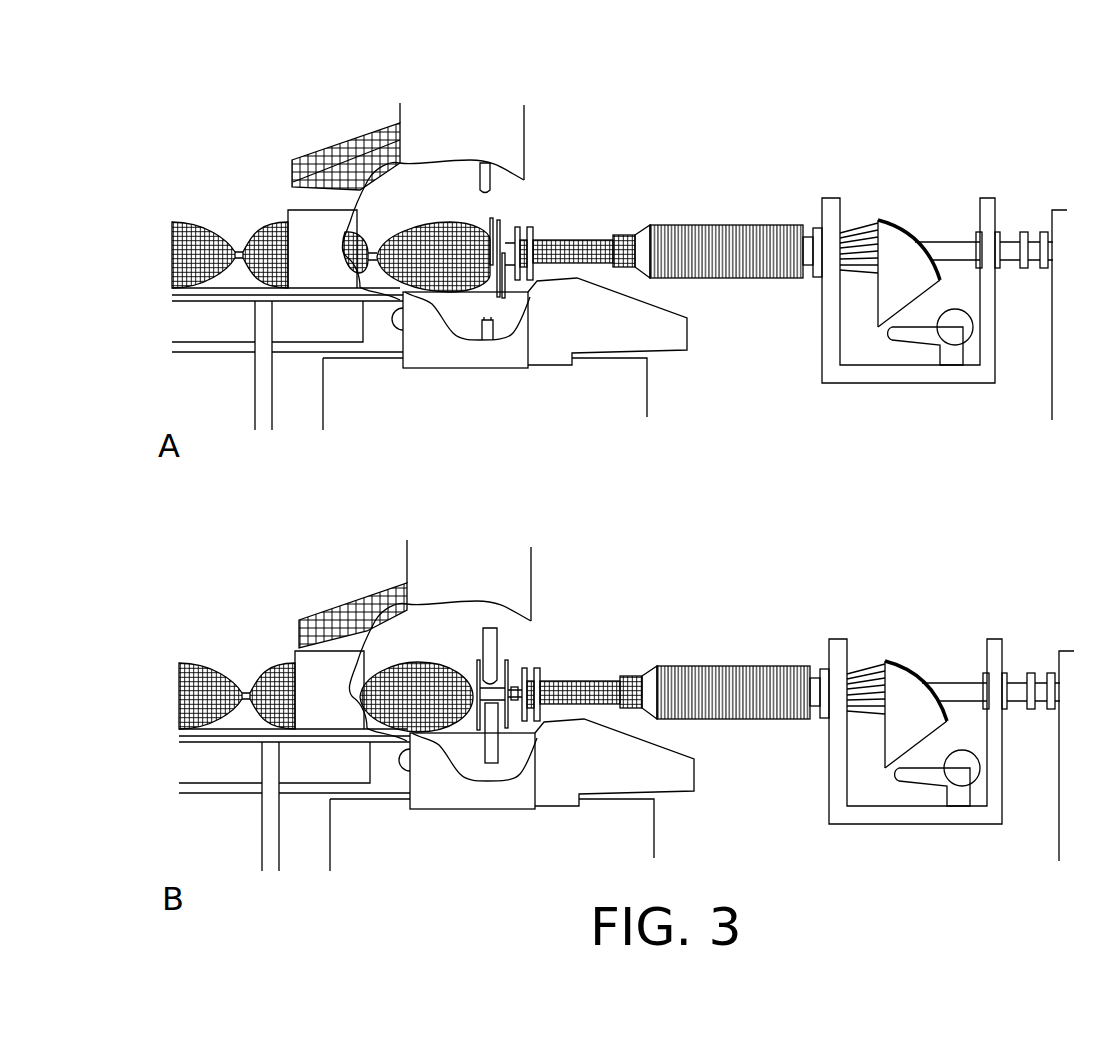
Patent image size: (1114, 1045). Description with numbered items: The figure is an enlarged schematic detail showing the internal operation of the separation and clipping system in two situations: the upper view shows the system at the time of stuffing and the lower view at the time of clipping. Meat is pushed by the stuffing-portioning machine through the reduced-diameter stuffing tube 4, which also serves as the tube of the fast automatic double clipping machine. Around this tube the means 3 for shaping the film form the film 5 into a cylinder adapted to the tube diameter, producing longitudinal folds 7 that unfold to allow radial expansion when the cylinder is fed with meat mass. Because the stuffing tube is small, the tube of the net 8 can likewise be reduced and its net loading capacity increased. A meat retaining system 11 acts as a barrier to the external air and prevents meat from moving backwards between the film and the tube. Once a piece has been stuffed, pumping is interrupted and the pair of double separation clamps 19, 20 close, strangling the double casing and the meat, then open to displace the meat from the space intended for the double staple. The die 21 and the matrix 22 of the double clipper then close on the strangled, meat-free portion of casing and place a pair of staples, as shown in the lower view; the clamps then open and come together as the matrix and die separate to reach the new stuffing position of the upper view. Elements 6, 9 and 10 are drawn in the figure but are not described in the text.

The means for shaping the film 3 is at (913, 240).
The stuffing tube 4 is at (960, 247).
The film 5 is at (970, 330).
The support block 6 is at (952, 355).
The longitudinal folds 7 is at (867, 222).
The tube of the net 8 is at (630, 237).
The threaded spindle 9 is at (730, 223).
The frame 10 is at (992, 372).
The meat retaining system 11 is at (530, 227).
The double separation clamp 19 is at (498, 227).
The double separation clamp 20 is at (490, 220).
The die 21 is at (483, 167).
The matrix 22 is at (487, 340).